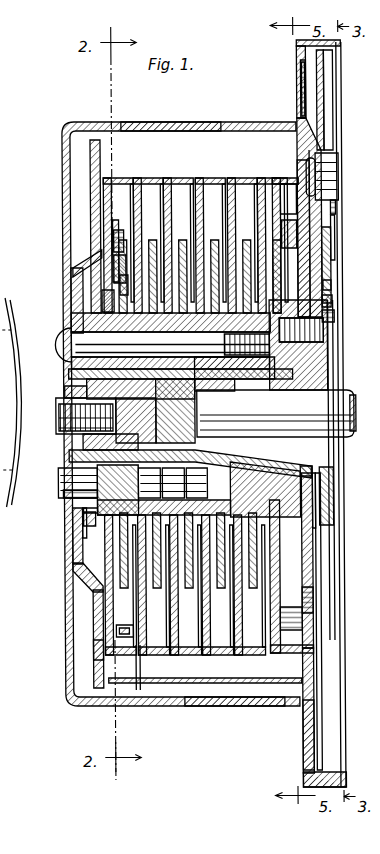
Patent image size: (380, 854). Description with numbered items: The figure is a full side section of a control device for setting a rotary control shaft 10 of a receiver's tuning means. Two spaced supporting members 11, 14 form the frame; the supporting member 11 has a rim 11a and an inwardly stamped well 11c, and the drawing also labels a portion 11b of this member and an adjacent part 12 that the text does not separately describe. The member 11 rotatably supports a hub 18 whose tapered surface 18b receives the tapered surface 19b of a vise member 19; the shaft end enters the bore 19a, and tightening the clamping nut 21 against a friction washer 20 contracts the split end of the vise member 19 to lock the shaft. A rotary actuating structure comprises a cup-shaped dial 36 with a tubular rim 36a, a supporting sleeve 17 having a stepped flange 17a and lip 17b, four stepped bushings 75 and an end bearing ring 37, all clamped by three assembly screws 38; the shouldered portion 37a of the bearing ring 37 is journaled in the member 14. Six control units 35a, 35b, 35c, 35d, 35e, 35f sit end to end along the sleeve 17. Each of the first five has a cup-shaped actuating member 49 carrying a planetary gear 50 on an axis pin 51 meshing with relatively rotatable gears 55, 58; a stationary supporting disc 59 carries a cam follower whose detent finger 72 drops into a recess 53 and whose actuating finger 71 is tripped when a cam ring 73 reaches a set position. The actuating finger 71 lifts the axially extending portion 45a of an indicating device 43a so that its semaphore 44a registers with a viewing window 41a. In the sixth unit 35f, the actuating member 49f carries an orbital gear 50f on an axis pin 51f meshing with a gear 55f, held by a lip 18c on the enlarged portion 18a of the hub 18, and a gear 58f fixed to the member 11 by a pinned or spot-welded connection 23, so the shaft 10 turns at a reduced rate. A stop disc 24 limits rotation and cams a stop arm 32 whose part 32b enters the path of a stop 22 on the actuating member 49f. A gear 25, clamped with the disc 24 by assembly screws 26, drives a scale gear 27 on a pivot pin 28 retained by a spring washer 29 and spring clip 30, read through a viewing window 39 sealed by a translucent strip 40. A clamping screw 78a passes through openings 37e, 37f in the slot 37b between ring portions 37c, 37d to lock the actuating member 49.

The rotary control shaft 10 is at (340, 390).
The supporting member 11 is at (287, 66).
The rim 11a is at (296, 44).
The lower portion of flange 11b is at (329, 506).
The well 11c is at (298, 160).
The driven member 12 is at (61, 372).
The end supporting member 14 is at (89, 170).
The supporting sleeve 17 is at (84, 386).
The stepped flanged portion 17a is at (250, 375).
The lip 17b is at (275, 380).
The rotatable hub 18 is at (61, 458).
The enlarged portion of hub 18a is at (325, 340).
The tapered surface 18b is at (300, 460).
The lip 18c is at (300, 484).
The vise member 19 is at (55, 418).
The bore 19a is at (322, 388).
The outer tapered surface 19b is at (310, 468).
The friction washer 20 is at (57, 398).
The clamping nut 21 is at (80, 446).
The stop 22 is at (300, 621).
The pinned or spot-welded connection 23 is at (324, 290).
The stop disc 24 is at (322, 300).
The gear 25 is at (331, 498).
The assembly screws 26 is at (326, 318).
The gear 27 is at (328, 235).
The pivot pin 28 is at (337, 175).
The spring washer 29 is at (325, 150).
The spring clip 30 is at (330, 160).
The stop arm 32 is at (310, 601).
The part of stop arm 32b is at (316, 643).
The control unit 35a is at (132, 170).
The control unit 35b is at (170, 660).
The control unit 35c is at (196, 170).
The control unit 35d is at (232, 660).
The control unit 35e is at (256, 170).
The control unit 35f is at (285, 660).
The cup-shaped dial 36 is at (62, 206).
The tubular rim 36a is at (185, 124).
The end bearing ring 37 is at (71, 322).
The shouldered portion 37a is at (75, 300).
The slot 37b is at (79, 560).
The ring portion 37c is at (69, 548).
The ring portion 37d is at (84, 528).
The opening 37e is at (60, 476).
The opening 37f is at (82, 516).
The assembly screws 38 is at (60, 346).
The viewing window 39 is at (302, 92).
The annular strip 40 is at (302, 78).
The viewing window 41a is at (300, 776).
The indicating device 43a is at (192, 692).
The semaphore 44a is at (300, 750).
The axially extending portion 45a is at (233, 705).
The cup-shaped actuating member 49 is at (89, 610).
The actuating member 49f is at (263, 178).
The planetary gear 50 is at (112, 220).
The orbital gear 50f is at (276, 225).
The axis pin 51 is at (112, 240).
The axis pin 51f is at (330, 210).
The recess 53 is at (96, 650).
The gear 55 is at (100, 298).
The gear 55f is at (330, 255).
The gear 58 is at (125, 280).
The gear 58f is at (326, 270).
The supporting disc 59 is at (140, 182).
The actuating finger 71 is at (133, 690).
The detent finger 72 is at (112, 634).
The cam ring 73 is at (118, 270).
The stepped bushing 75 is at (72, 580).
The clamping screw 78a is at (62, 494).